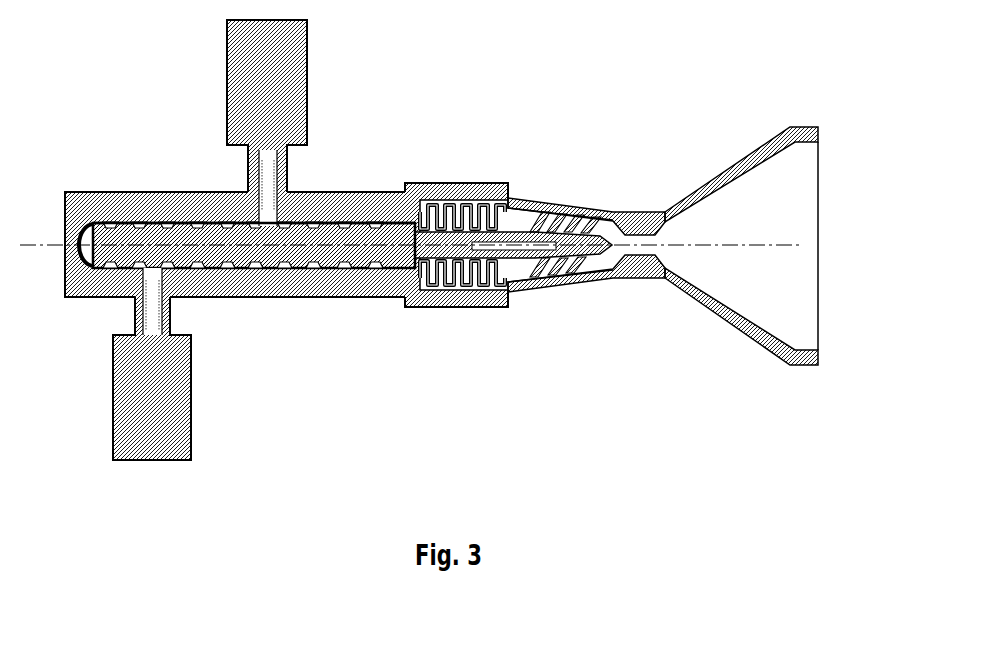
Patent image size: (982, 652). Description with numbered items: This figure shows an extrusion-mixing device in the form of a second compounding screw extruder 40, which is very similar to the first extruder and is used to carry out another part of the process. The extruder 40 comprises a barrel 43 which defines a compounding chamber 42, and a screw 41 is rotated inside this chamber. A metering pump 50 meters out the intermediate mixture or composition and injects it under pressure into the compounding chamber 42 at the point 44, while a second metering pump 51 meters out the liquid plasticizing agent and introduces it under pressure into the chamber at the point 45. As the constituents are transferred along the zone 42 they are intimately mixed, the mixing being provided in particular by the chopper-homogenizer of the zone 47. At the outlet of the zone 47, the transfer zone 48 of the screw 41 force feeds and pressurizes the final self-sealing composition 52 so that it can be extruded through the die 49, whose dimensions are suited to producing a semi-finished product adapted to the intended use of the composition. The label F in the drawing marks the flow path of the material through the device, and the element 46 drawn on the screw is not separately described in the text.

The second compounding screw extruder 40 is at (550, 90).
The screw 41 is at (233, 210).
The compounding chamber 42 is at (167, 210).
The barrel 43 is at (383, 203).
The point of injection of the intermediate mixture 44 is at (167, 300).
The point of introduction of the liquid plasticizing agent 45 is at (305, 198).
The piston rod 46 is at (300, 270).
The chopper-homogenizer zone 47 is at (517, 262).
The transfer zone 48 is at (590, 278).
The die 49 is at (765, 212).
The metering pump 50 is at (152, 411).
The second metering pump 51 is at (282, 37).
The final self-sealing composition 52 is at (650, 243).
The fluid flow F is at (522, 250).